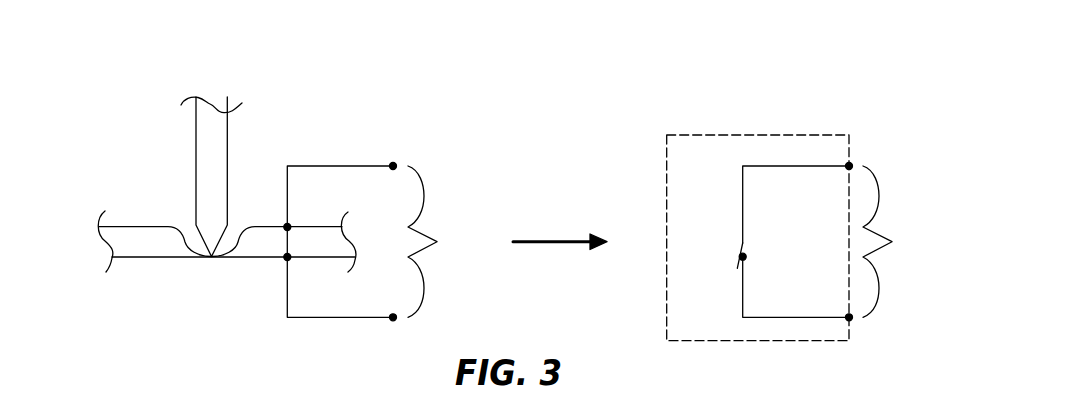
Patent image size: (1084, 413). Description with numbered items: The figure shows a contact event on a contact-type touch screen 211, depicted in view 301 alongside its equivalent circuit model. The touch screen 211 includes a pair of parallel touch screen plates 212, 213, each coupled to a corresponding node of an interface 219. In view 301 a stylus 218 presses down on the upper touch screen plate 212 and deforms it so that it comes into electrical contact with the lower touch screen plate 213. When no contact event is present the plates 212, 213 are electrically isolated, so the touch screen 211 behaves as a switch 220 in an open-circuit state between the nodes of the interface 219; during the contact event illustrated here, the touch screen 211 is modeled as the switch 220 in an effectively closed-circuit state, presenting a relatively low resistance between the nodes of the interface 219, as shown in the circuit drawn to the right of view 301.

The view 301 is at (307, 84).
The contact-type touch screen 211 is at (148, 130).
The touch screen plate 212 is at (152, 227).
The touch screen plate 213 is at (152, 257).
The stylus 218 is at (227, 143).
The interface 219 is at (607, 242).
The switch 220 is at (744, 243).